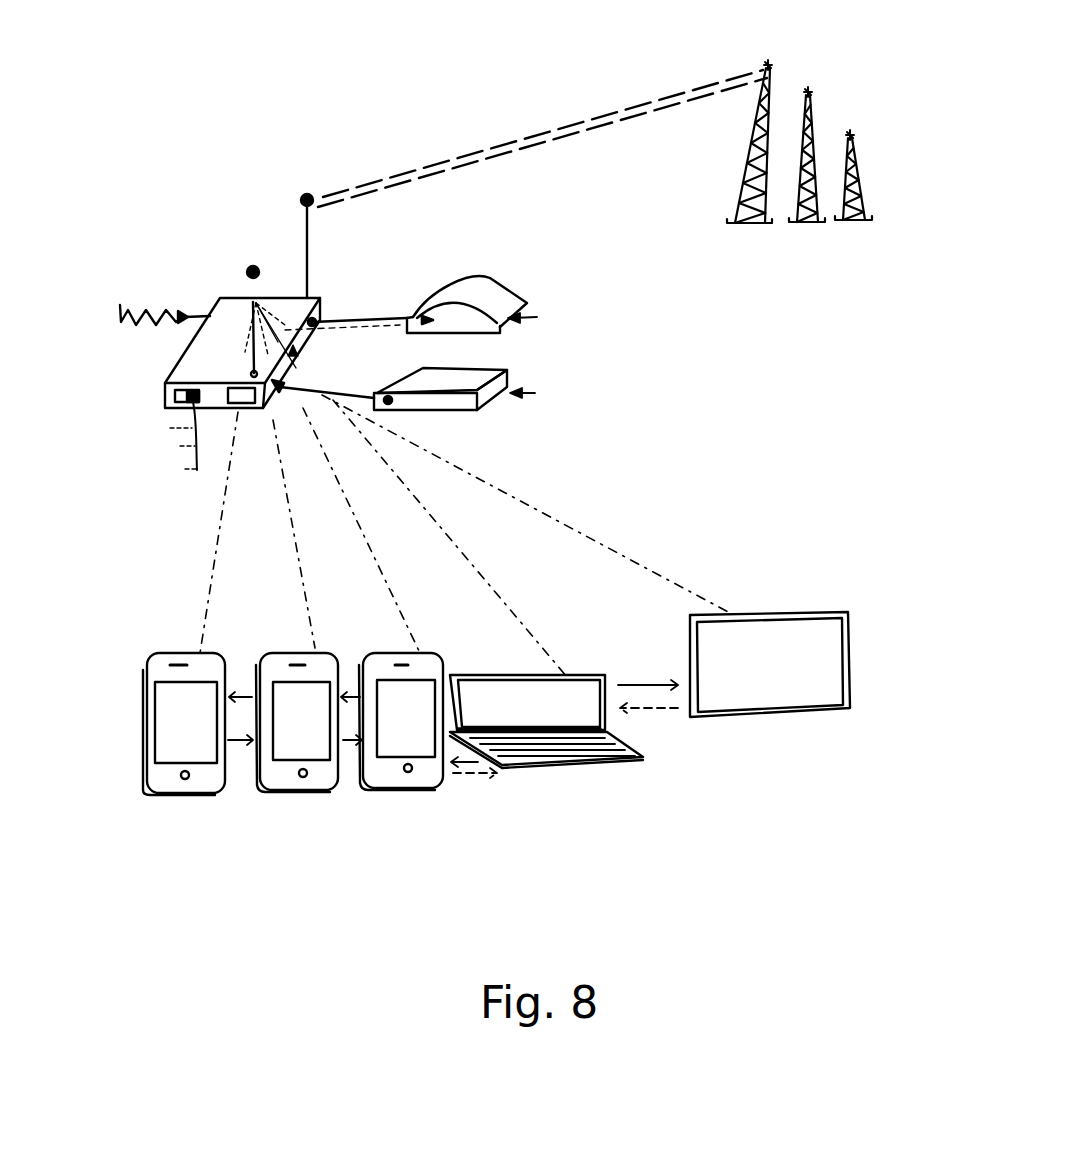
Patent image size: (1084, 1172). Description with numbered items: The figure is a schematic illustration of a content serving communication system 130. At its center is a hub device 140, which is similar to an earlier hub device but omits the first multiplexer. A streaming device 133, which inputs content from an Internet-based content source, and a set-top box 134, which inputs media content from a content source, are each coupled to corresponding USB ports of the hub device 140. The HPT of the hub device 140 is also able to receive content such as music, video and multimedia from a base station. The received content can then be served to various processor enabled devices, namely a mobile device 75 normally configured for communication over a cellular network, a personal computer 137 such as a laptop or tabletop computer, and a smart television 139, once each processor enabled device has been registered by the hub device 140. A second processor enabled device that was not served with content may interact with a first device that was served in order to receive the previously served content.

The communication system 130 is at (233, 80).
The hub device 140 is at (210, 348).
The streaming device 133 is at (485, 290).
The set-top box 134 is at (447, 397).
The mobile device 75 is at (170, 757).
The personal computer 137 is at (547, 757).
The smart television 139 is at (800, 690).